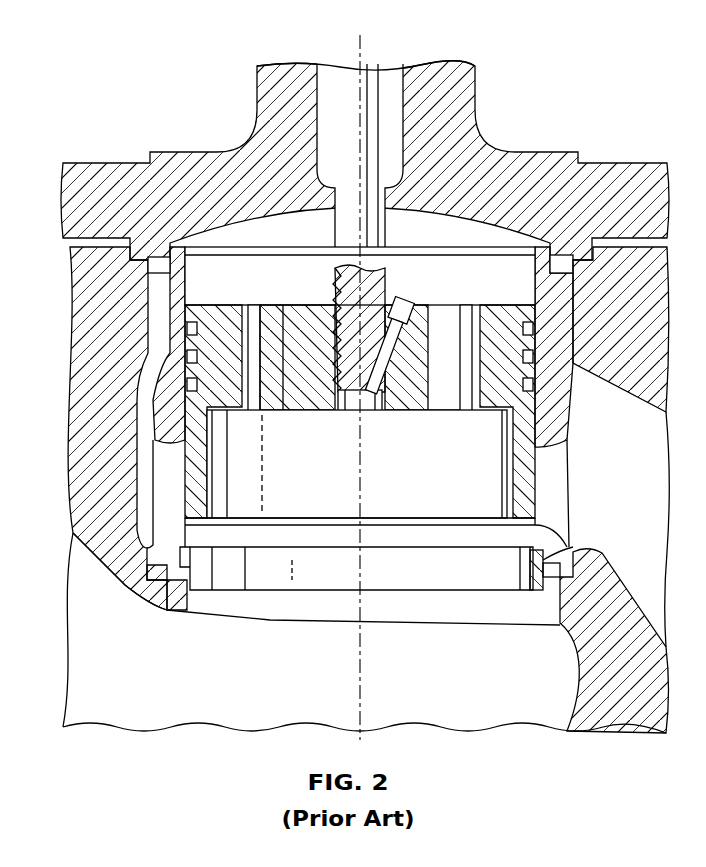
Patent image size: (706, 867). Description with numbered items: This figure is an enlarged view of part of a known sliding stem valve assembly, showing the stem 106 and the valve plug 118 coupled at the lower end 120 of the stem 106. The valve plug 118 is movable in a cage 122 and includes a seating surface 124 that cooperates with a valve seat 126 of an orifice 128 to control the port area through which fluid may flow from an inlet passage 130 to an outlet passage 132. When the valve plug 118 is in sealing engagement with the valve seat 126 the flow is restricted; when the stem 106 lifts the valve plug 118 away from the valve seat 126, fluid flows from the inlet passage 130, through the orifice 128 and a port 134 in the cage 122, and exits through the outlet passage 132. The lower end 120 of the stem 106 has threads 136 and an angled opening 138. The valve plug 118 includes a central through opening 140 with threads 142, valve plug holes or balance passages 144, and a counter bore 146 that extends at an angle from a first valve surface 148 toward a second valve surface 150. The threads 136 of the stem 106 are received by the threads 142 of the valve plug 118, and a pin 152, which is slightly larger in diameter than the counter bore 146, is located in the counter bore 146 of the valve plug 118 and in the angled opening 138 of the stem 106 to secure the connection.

The valve stem 106 is at (336, 222).
The valve plug 118 is at (383, 509).
The lower end 120 is at (344, 398).
The cage 122 is at (556, 412).
The seating surface 124 is at (568, 539).
The valve seat 126 is at (542, 588).
The orifice 128 is at (443, 591).
The inlet passage 130 is at (338, 691).
The outlet passage 132 is at (638, 511).
The port 134 is at (550, 482).
The threads 136 is at (336, 318).
The angled opening 138 is at (354, 396).
The central through opening 140 is at (370, 410).
The threads 142 is at (326, 366).
The balance passages 144 is at (252, 314).
The counter bore 146 is at (429, 378).
The first valve surface 148 is at (511, 306).
The second valve surface 150 is at (401, 411).
The pin 152 is at (406, 302).